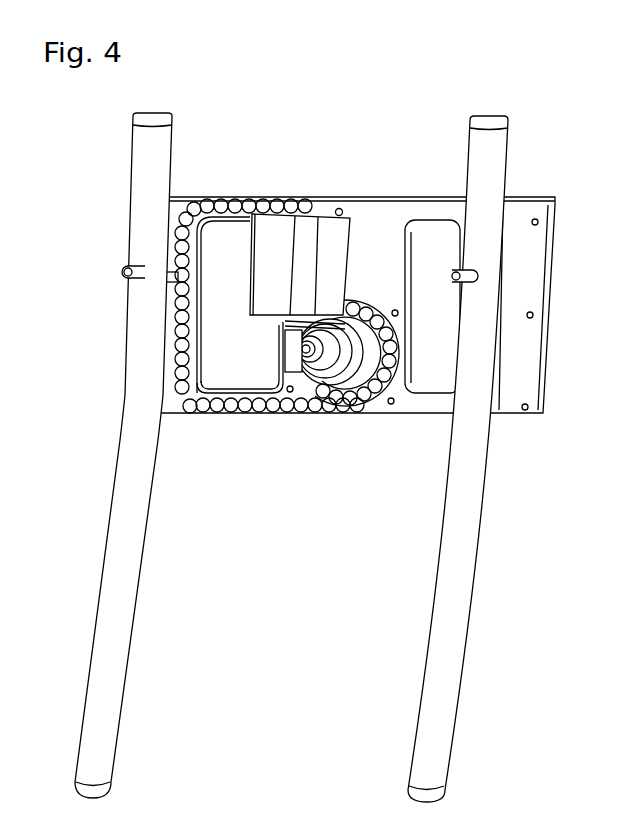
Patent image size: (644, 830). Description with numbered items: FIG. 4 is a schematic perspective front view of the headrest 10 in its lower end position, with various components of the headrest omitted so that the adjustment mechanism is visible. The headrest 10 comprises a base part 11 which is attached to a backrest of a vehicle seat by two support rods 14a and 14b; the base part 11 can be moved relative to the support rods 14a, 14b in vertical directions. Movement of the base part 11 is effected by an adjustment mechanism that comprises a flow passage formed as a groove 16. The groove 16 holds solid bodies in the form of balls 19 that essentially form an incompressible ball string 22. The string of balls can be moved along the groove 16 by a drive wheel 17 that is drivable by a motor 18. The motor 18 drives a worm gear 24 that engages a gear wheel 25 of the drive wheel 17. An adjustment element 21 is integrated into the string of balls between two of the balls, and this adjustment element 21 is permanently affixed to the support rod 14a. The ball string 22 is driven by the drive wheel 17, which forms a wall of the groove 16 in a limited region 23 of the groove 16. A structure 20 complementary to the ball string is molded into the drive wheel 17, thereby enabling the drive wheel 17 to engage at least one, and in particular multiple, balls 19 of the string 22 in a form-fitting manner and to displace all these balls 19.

The headrest 10 is at (571, 62).
The base part 11 is at (443, 210).
The support rod 14a is at (117, 612).
The support rod 14b is at (452, 606).
The groove 16 is at (219, 258).
The drive wheel 17 is at (348, 410).
The motor 18 is at (326, 242).
The balls 19 is at (180, 366).
The structure complementary to the ball string 20 is at (355, 318).
The adjustment element 21 is at (126, 265).
The ball string 22 is at (172, 330).
The limited region 23 is at (368, 289).
The worm gear 24 is at (285, 346).
The gear wheel 25 is at (366, 404).